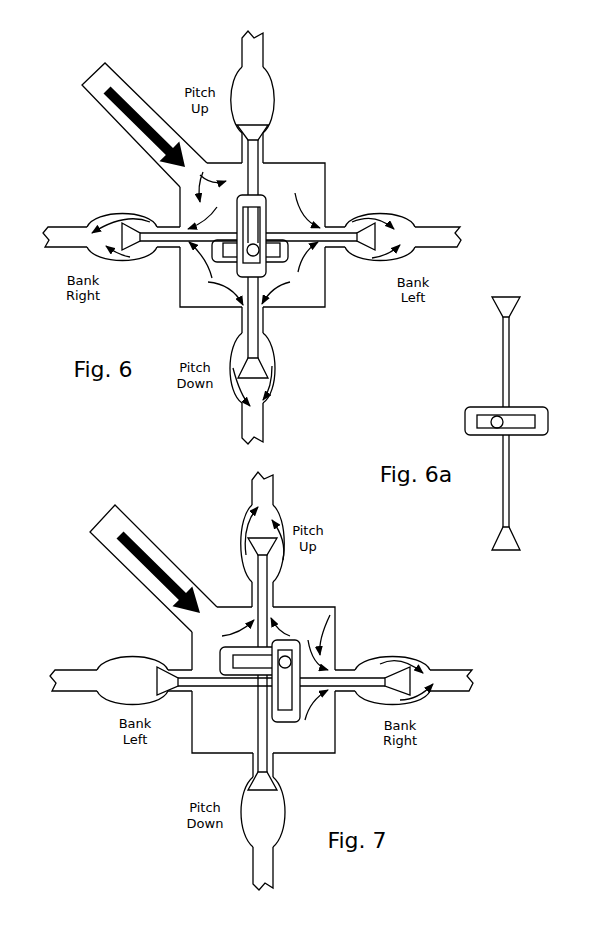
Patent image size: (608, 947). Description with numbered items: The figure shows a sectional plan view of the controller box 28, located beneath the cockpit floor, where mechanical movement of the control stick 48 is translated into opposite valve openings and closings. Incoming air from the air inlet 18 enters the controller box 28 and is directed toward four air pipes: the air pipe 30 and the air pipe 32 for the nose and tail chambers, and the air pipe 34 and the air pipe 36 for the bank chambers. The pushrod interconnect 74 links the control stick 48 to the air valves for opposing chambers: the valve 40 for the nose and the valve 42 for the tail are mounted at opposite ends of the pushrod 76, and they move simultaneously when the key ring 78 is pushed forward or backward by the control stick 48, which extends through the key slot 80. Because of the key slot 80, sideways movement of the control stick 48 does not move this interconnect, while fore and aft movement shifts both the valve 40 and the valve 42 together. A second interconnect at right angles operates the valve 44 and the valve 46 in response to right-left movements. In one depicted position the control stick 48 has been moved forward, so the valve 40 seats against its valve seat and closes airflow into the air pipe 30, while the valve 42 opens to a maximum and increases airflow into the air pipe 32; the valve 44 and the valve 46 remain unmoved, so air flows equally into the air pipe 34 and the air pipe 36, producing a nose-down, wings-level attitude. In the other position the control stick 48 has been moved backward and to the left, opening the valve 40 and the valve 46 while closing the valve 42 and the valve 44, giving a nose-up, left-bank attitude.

In FIG. 6, the air inlet 18 is at (137, 87).
In FIG. 7, the air inlet 18 is at (153, 568).
In FIG. 6, the controller box 28 is at (298, 165).
In FIG. 7, the controller box 28 is at (192, 755).
In FIG. 6, the air pipe 30 is at (268, 73).
In FIG. 7, the air pipe 30 is at (280, 511).
In FIG. 6, the air pipe 32 is at (276, 347).
In FIG. 7, the air pipe 32 is at (287, 786).
In FIG. 6, the air pipe 34 is at (88, 222).
In FIG. 7, the air pipe 34 is at (97, 668).
In FIG. 6, the air pipe 36 is at (421, 222).
In FIG. 7, the air pipe 36 is at (433, 668).
In FIG. 6, the valve 40 is at (262, 121).
In FIG. 6A, the valve 40 is at (512, 292).
In FIG. 7, the valve 40 is at (250, 545).
In FIG. 6, the valve 42 is at (243, 358).
In FIG. 6A, the valve 42 is at (512, 560).
In FIG. 7, the valve 42 is at (254, 804).
In FIG. 6, the valve 44 is at (141, 222).
In FIG. 7, the valve 44 is at (169, 665).
In FIG. 6, the valve 46 is at (358, 250).
In FIG. 7, the valve 46 is at (385, 692).
In FIG. 6, the control stick 48 is at (259, 252).
In FIG. 6A, the control stick 48 is at (496, 415).
In FIG. 7, the control stick 48 is at (291, 660).
In FIG. 6A, the pushrod interconnect 74 is at (489, 428).
In FIG. 6A, the pushrod 76 is at (514, 470).
In FIG. 6A, the key ring 78 is at (465, 418).
In FIG. 6A, the key slot 80 is at (530, 415).